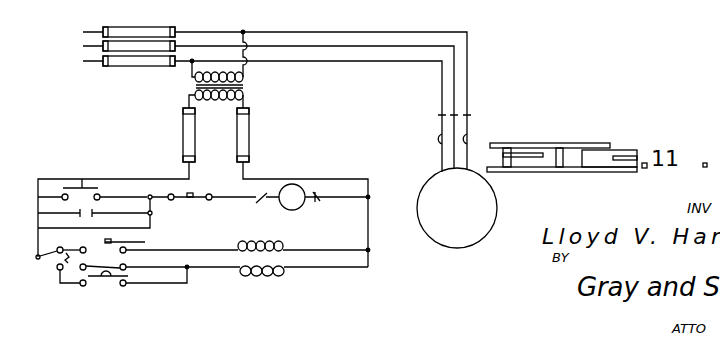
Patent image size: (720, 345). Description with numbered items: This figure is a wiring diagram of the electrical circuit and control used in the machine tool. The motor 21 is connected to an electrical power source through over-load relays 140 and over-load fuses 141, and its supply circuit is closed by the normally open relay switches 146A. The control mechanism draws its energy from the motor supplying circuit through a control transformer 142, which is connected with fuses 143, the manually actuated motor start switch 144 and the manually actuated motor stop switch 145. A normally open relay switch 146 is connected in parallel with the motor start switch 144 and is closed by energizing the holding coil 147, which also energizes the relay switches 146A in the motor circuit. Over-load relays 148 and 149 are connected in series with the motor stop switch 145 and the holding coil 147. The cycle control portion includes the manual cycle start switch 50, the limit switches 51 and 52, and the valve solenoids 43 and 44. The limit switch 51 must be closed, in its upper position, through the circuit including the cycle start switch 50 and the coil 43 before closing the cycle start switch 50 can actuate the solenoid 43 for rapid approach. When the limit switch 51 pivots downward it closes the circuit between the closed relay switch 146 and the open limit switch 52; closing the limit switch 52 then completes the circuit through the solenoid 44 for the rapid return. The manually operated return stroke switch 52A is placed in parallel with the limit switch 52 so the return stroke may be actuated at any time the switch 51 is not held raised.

The over-load fuses 141 is at (148, 60).
The control transformer 142 is at (246, 88).
The fuses 143 is at (244, 136).
The motor start switch 144 is at (82, 184).
The motor stop switch 145 is at (184, 200).
The relay switch 146 is at (80, 215).
The relay switches 146A is at (446, 108).
The holding coil 147 is at (294, 186).
The over-load relay 148 is at (258, 196).
The over-load relay 149 is at (316, 200).
The over-load relays 140 is at (440, 141).
The motor 21 is at (472, 219).
The valve solenoid 43 is at (282, 248).
The valve solenoid 44 is at (256, 270).
The cycle start switch 50 is at (144, 243).
The limit switch 51 is at (44, 254).
The limit switch 52 is at (130, 258).
The return stroke switch 52A is at (106, 285).